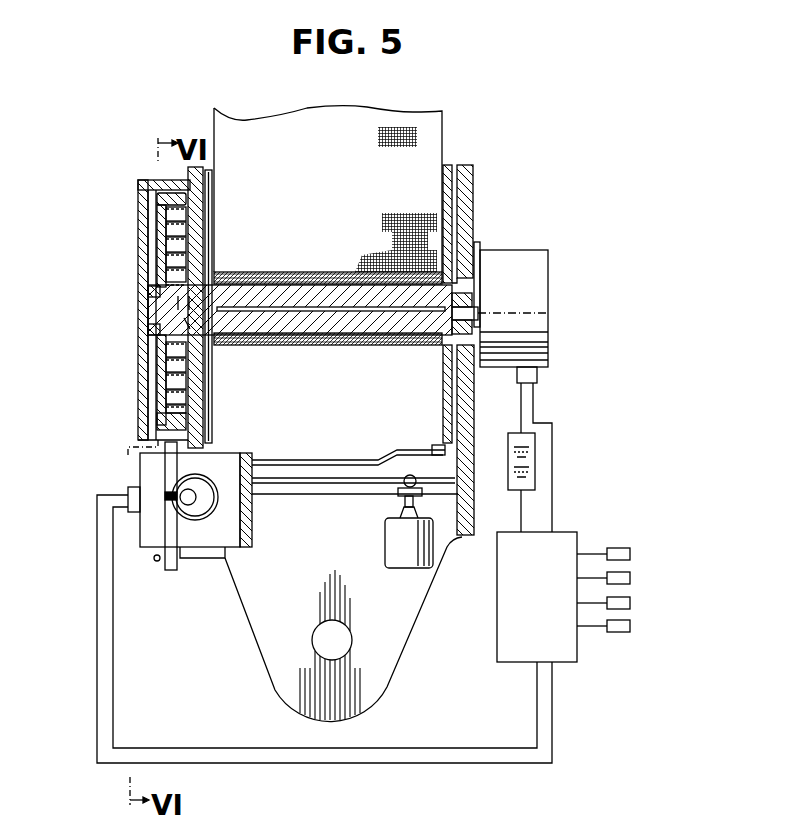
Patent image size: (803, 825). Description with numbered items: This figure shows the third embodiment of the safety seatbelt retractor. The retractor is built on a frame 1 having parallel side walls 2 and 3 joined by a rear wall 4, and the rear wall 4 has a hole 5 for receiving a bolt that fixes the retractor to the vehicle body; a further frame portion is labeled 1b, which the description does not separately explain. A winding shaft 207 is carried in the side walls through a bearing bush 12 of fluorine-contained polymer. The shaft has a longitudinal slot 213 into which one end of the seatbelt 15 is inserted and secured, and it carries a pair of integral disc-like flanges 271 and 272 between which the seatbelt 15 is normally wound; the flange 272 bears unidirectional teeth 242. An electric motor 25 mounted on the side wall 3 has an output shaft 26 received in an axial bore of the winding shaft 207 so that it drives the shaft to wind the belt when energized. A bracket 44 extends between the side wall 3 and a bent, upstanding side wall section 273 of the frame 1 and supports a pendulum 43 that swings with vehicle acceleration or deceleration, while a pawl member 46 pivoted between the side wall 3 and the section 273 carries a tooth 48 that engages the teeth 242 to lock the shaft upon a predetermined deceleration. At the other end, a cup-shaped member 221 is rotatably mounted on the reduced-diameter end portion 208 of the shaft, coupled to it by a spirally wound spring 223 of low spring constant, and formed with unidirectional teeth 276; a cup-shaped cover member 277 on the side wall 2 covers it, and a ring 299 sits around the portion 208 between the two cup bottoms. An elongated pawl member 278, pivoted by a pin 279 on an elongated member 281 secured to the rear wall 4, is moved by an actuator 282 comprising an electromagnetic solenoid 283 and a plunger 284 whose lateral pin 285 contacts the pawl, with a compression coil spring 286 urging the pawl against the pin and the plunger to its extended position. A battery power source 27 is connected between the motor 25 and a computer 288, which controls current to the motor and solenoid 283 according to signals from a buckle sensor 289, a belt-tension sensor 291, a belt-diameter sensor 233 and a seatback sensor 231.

The frame 1 is at (421, 650).
The cylinder 1b is at (203, 167).
The side wall 2 is at (198, 422).
The side wall 3 is at (477, 512).
The rear wall 4 is at (266, 641).
The hole 5 is at (352, 640).
The bearing bush 12 is at (478, 323).
The seatbelt 15 is at (450, 125).
The electric motor 25 is at (549, 314).
The output shaft 26 is at (474, 302).
The electric power source 27 is at (536, 442).
The pendulum 43 is at (400, 568).
The bracket plate 44 is at (350, 490).
The pawl member 46 is at (293, 466).
The tooth 48 is at (433, 445).
The winding shaft 207 is at (290, 318).
The reduced-diameter end portion 208 is at (156, 300).
The longitudinal slot 213 is at (363, 310).
The cup-shaped member 221 is at (157, 215).
The spirally wound spring 223 is at (168, 233).
The seatback sensor 231 is at (631, 626).
The belt-diameter sensor 233 is at (631, 602).
The unidirectional teeth 242 is at (445, 443).
The flange 271 is at (213, 405).
The flange 272 is at (446, 378).
The side wall section 273 is at (250, 537).
The unidirectional teeth 276 is at (164, 194).
The cup-shaped cover member 277 is at (140, 196).
The elongated pawl member 278 is at (175, 570).
The pin 279 is at (163, 563).
The elongated member 281 is at (195, 558).
The actuator 282 is at (132, 478).
The electromagnetic solenoid 283 is at (143, 465).
The plunger 284 is at (200, 508).
The pin 285 is at (170, 498).
The compression coil spring 286 is at (195, 498).
The computer 288 is at (578, 652).
The buckle sensor 289 is at (631, 553).
The belt-tension sensor 291 is at (631, 578).
The ring 299 is at (150, 334).